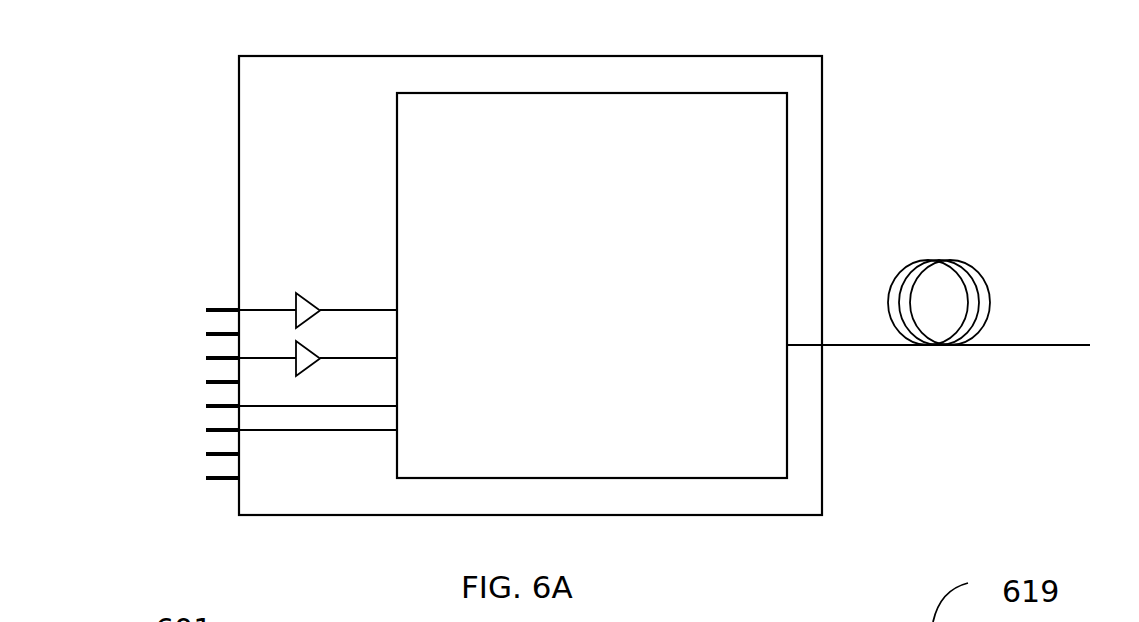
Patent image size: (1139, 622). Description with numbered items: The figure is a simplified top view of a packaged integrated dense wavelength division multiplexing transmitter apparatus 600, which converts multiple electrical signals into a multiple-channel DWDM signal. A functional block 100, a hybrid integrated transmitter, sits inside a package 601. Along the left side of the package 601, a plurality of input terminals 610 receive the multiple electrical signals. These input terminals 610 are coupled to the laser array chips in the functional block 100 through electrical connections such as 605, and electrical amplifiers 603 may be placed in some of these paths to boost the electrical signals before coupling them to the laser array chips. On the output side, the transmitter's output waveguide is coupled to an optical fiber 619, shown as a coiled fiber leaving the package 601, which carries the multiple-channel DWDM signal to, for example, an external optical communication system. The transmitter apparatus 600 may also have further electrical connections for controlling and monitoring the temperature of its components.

The packaged integrated DWDM transmitter apparatus 600 is at (988, 85).
The package 601 is at (239, 220).
The electrical amplifiers 603 is at (312, 295).
The electrical connections 605 is at (312, 431).
The input terminals 610 is at (195, 355).
The functional block 100 is at (636, 256).
The optical fiber 619 is at (943, 260).